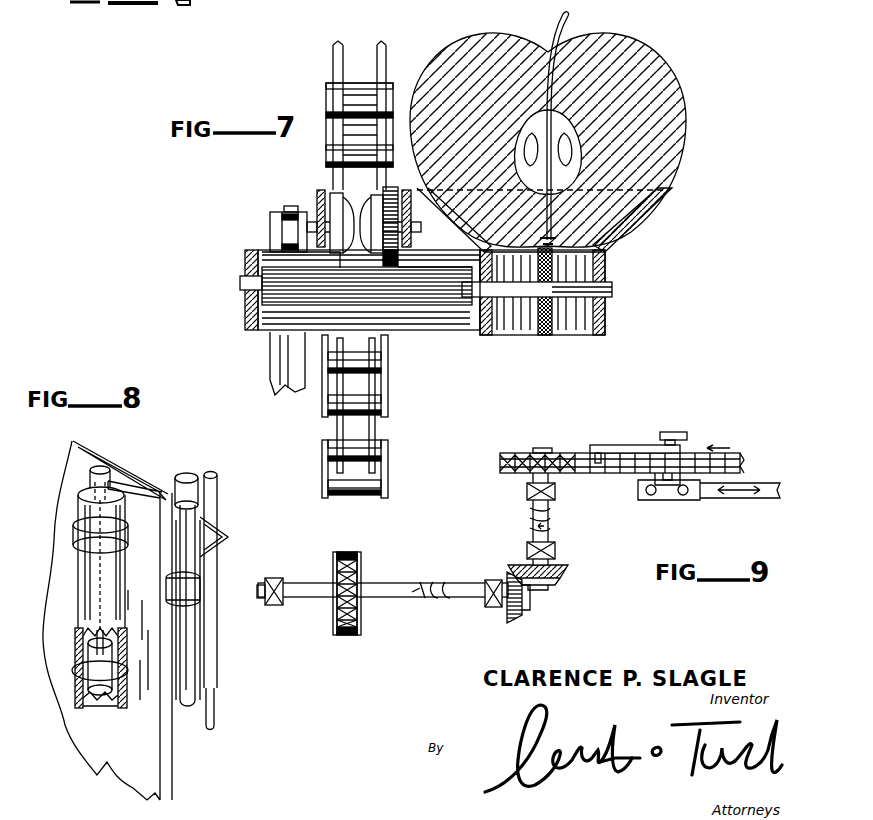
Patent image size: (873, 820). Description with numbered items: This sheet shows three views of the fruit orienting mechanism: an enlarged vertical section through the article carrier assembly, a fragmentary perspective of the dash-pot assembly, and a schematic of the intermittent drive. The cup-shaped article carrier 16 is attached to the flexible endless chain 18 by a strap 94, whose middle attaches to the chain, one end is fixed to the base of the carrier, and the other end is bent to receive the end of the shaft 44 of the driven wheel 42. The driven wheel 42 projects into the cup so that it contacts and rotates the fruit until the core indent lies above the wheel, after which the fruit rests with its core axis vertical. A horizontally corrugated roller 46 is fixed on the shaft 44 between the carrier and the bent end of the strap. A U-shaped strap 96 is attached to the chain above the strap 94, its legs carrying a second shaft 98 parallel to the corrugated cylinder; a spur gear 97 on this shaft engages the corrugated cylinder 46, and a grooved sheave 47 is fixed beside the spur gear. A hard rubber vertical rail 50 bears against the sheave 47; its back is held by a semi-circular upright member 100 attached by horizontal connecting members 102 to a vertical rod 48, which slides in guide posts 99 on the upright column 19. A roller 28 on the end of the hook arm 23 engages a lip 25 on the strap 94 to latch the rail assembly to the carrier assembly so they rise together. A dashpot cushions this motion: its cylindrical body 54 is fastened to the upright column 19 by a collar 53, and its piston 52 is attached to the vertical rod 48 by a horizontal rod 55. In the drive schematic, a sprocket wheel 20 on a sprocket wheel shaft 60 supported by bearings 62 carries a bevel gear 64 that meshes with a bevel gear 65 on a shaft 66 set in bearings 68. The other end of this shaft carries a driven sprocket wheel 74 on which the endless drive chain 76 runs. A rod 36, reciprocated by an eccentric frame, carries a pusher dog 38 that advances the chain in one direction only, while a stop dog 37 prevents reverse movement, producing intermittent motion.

In FIG. 7, the article carrier 16 is at (622, 232).
In FIG. 9, the article carrier 16 is at (342, 553).
In FIG. 7, the flexible endless chain 18 is at (365, 400).
In FIG. 8, the upright column 19 is at (73, 480).
In FIG. 9, the sprocket wheel 20 is at (358, 575).
In FIG. 7, the hook arm 23 is at (268, 232).
In FIG. 7, the lip 25 is at (250, 260).
In FIG. 7, the roller 28 is at (290, 218).
In FIG. 9, the rod 36 is at (765, 498).
In FIG. 9, the stop dog 37 is at (618, 446).
In FIG. 9, the pusher dog 38 is at (666, 480).
In FIG. 7, the driven wheel 42 is at (566, 273).
In FIG. 7, the shaft 44 is at (612, 290).
In FIG. 7, the horizontally corrugated roller 46 is at (447, 283).
In FIG. 7, the grooved sheave 47 is at (360, 218).
In FIG. 8, the vertical rod 48 is at (193, 705).
In FIG. 8, the vertical rail 50 is at (212, 708).
In FIG. 8, the piston 52 is at (88, 648).
In FIG. 8, the collar 53 is at (75, 540).
In FIG. 8, the cylindrical body 54 is at (78, 692).
In FIG. 8, the horizontal rod 55 is at (138, 487).
In FIG. 9, the sprocket wheel shaft 60 is at (393, 590).
In FIG. 9, the bearing 62 is at (275, 578).
In FIG. 9, the bevel gear 64 is at (522, 615).
In FIG. 9, the bevel gear 65 is at (562, 578).
In FIG. 9, the shaft 66 is at (533, 530).
In FIG. 9, the bearing 68 is at (556, 550).
In FIG. 9, the driven sprocket wheel 74 is at (556, 454).
In FIG. 9, the endless drive chain 76 is at (742, 462).
In FIG. 7, the strap 94 is at (265, 318).
In FIG. 7, the U-shaped strap 96 is at (318, 196).
In FIG. 7, the spur gear 97 is at (392, 272).
In FIG. 7, the second shaft 98 is at (412, 231).
In FIG. 8, the guide post 99 is at (202, 592).
In FIG. 8, the semi-circular upright member 100 is at (212, 648).
In FIG. 8, the horizontal connecting member 102 is at (228, 535).